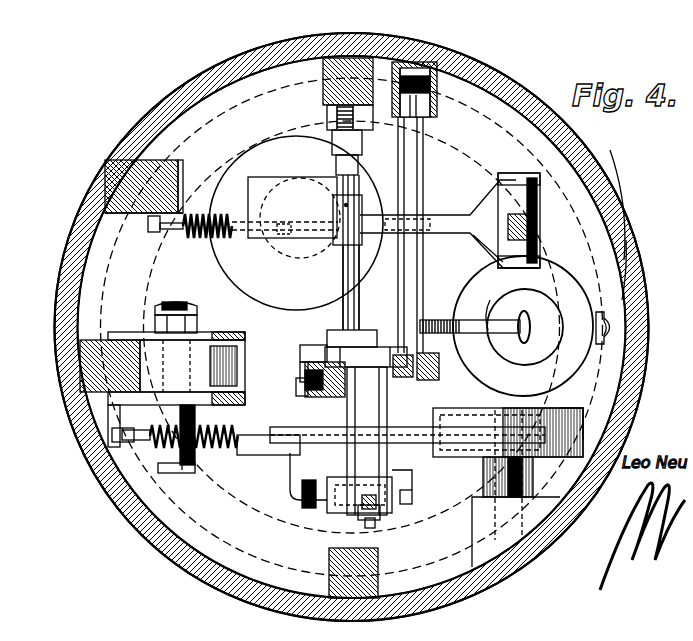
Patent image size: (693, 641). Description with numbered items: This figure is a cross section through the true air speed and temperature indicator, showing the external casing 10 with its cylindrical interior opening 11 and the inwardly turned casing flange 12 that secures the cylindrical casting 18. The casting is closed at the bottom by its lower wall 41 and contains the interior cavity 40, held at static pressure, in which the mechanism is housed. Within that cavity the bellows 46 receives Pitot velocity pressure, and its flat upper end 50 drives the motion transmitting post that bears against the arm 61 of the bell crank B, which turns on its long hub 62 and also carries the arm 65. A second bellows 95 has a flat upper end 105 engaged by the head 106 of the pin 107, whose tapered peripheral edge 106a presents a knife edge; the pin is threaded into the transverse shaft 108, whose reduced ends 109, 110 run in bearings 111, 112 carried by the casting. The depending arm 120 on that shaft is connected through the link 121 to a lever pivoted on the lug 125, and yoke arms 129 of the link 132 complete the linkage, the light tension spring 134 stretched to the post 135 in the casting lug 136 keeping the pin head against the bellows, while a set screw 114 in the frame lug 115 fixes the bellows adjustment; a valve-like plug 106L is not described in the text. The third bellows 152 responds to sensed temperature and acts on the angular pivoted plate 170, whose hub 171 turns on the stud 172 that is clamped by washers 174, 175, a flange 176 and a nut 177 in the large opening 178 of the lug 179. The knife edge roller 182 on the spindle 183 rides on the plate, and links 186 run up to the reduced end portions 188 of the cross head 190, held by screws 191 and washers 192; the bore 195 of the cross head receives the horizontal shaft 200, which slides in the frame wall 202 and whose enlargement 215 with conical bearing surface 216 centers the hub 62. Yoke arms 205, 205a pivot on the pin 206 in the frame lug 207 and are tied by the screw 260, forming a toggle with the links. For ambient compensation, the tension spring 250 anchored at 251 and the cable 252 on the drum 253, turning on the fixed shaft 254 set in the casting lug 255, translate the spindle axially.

The external casing 10 is at (178, 88).
The casing flange 12 is at (519, 86).
The lower wall of casting 41 is at (200, 118).
The interior cavity 40 is at (230, 128).
The bellows 46 is at (233, 163).
The lug 125 is at (618, 190).
The cylindrical interior opening 11 is at (630, 238).
The casting 18 is at (342, 57).
The reduced end of shaft 110 is at (455, 62).
The bearing 112 is at (470, 78).
The depending arm 120 is at (426, 216).
The transversely extending shaft 108 is at (423, 280).
The link 121 is at (466, 250).
The yoke arms 129 is at (490, 175).
The link 132 is at (470, 195).
The bellows 95 is at (600, 275).
The flat upper end of bellows 105 is at (548, 310).
The peripheral edge 106a is at (502, 312).
The pin 107 is at (478, 340).
The head of pin 106 is at (530, 332).
The set screw 114 is at (612, 330).
The frame lug 115 is at (610, 340).
The casting lug 136 is at (130, 185).
The post 135 is at (152, 233).
The tension spring 134 is at (188, 240).
The arm of bell crank 61 is at (258, 178).
The bell crank B is at (270, 178).
The flat upper end of bellows 50 is at (278, 260).
The valve plug 106L is at (288, 240).
The hub 62 is at (348, 190).
The arm 65 is at (348, 205).
The conical bearing surface 216 is at (366, 262).
The enlargement 215 is at (362, 283).
The horizontal shaft 200 is at (362, 297).
The frame wall 202 is at (362, 300).
The washer 174 is at (158, 322).
The nut 177 is at (160, 306).
The opening 178 is at (232, 350).
The lug 179 is at (228, 362).
The hub 171 is at (157, 447).
The stud 172 is at (143, 523).
The tension spring 250 is at (165, 452).
The anchorage 251 is at (145, 453).
The washer 175 is at (108, 440).
The flange 176 is at (116, 447).
The angular pivoted plate 170 is at (240, 452).
The spindle 183 is at (285, 456).
The links 186 is at (310, 412).
The transverse bore 195 is at (340, 330).
The cross head 190 is at (320, 345).
The reduced end portions 188 is at (322, 362).
The screws 191 is at (306, 366).
The washers 192 is at (302, 388).
The bellows 152 is at (410, 462).
The bearing 111 is at (436, 380).
The reduced end of shaft 109 is at (415, 390).
The yoke arm 205 is at (300, 478).
The yoke arm 205a is at (408, 478).
The pin 206 is at (413, 498).
The knife edge roller 182 is at (305, 508).
The frame lug 207 is at (335, 523).
The screw 260 is at (380, 510).
The cable 252 is at (452, 440).
The drum 253 is at (560, 408).
The fixed shaft 254 is at (522, 530).
The lug 255 is at (478, 590).